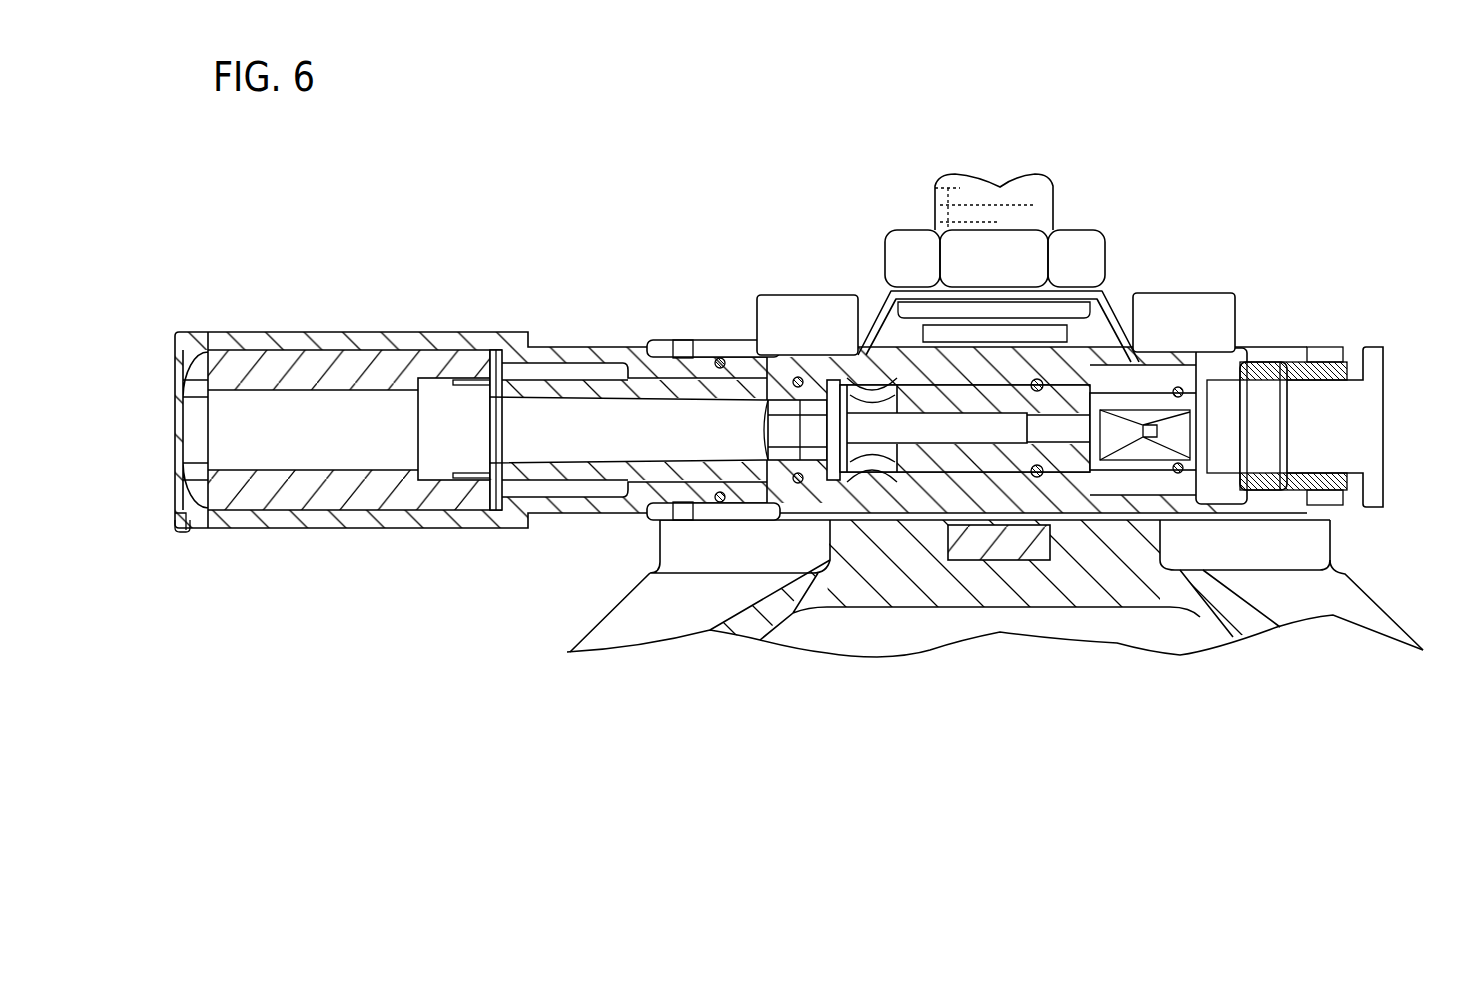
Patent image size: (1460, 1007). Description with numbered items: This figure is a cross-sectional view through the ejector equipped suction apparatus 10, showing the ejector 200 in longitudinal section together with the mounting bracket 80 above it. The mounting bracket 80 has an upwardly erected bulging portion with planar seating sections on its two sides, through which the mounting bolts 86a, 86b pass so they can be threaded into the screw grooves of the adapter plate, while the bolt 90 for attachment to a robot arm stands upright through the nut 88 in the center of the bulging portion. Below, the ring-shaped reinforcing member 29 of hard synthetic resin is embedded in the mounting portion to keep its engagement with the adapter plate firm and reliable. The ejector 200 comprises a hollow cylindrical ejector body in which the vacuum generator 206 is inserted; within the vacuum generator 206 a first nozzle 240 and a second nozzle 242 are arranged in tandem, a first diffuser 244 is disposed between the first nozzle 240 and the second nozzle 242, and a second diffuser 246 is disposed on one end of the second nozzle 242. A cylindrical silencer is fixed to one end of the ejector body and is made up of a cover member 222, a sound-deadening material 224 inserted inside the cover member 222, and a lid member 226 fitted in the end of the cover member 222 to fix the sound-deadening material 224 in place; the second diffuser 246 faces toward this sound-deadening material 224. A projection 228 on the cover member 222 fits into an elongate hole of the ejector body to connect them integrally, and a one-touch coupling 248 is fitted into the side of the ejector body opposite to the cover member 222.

The ejector equipped suction apparatus 10 is at (816, 201).
The reinforcing member 29 is at (1000, 561).
The mounting bracket 80 is at (1106, 300).
The mounting bolt 86a is at (803, 306).
The mounting bolt 86b is at (1190, 304).
The nut 88 is at (1106, 243).
The bolt 90 is at (1055, 198).
The ejector 200 is at (585, 522).
The vacuum generator 206 is at (889, 504).
The cover member 222 is at (333, 332).
The sound-deadening material 224 is at (322, 512).
The lid member 226 is at (173, 497).
The projection 228 is at (674, 340).
The first nozzle 240 is at (1188, 472).
The second nozzle 242 is at (990, 480).
The first diffuser 244 is at (1112, 465).
The second diffuser 246 is at (770, 418).
The one-touch coupling 248 is at (1367, 416).